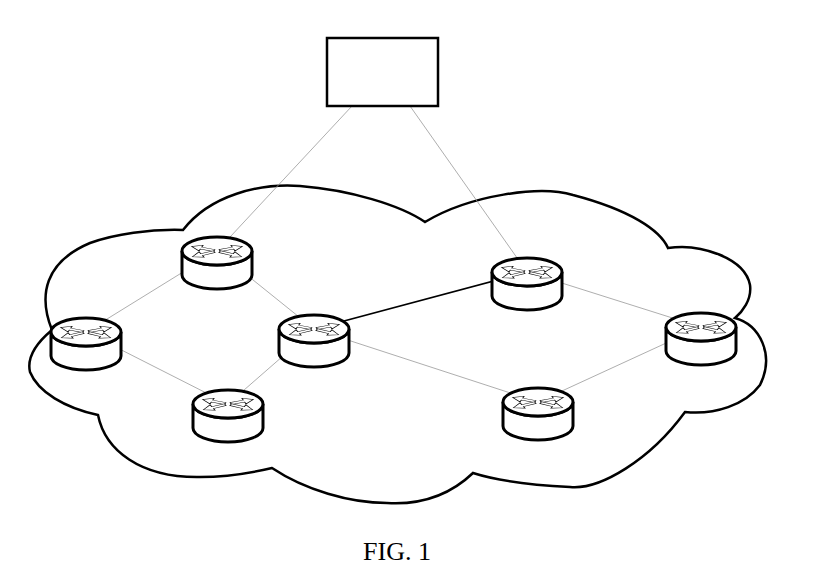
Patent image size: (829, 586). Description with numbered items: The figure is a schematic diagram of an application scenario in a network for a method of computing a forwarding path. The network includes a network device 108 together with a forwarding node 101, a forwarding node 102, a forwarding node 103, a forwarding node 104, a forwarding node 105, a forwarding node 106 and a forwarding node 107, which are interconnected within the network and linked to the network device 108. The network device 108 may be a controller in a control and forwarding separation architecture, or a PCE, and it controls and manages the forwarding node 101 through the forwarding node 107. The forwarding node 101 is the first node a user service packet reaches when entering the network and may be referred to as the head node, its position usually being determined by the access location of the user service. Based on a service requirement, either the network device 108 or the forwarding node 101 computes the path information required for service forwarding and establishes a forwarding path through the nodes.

The forwarding node 101 is at (120, 354).
The forwarding node 102 is at (243, 243).
The forwarding node 103 is at (263, 425).
The forwarding node 104 is at (345, 318).
The forwarding node 105 is at (500, 265).
The forwarding node 106 is at (500, 425).
The forwarding node 107 is at (668, 318).
The network device 108 is at (438, 78).